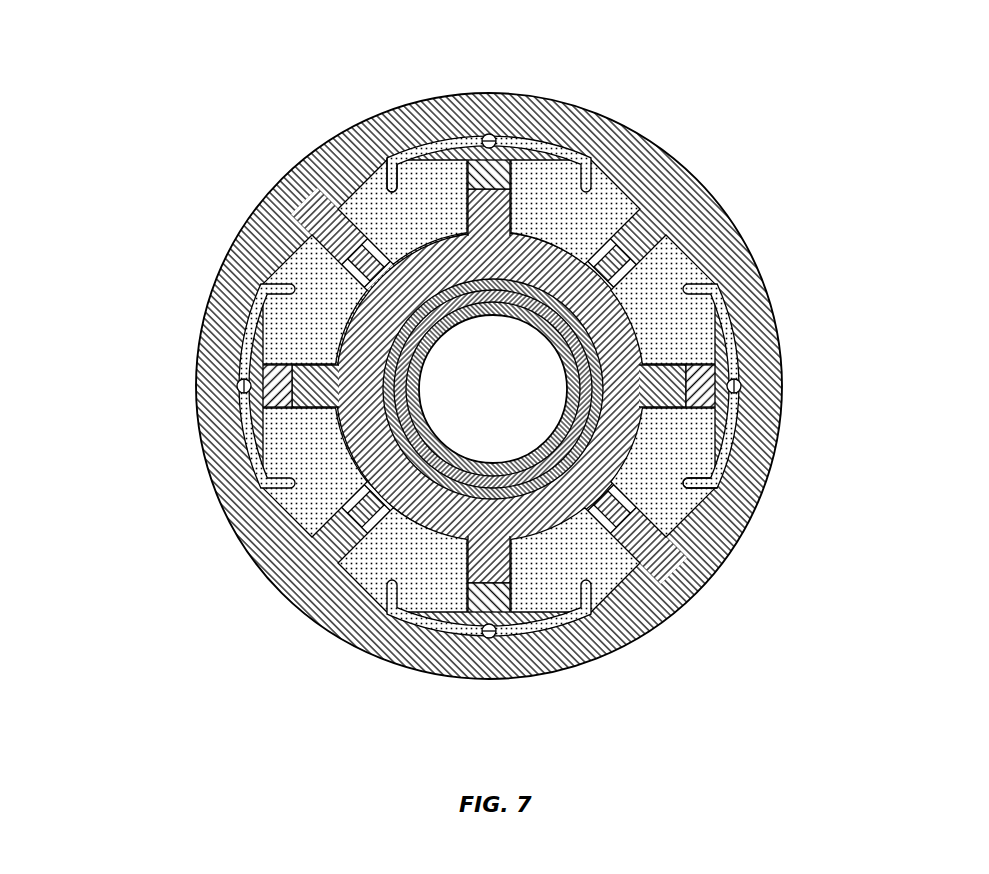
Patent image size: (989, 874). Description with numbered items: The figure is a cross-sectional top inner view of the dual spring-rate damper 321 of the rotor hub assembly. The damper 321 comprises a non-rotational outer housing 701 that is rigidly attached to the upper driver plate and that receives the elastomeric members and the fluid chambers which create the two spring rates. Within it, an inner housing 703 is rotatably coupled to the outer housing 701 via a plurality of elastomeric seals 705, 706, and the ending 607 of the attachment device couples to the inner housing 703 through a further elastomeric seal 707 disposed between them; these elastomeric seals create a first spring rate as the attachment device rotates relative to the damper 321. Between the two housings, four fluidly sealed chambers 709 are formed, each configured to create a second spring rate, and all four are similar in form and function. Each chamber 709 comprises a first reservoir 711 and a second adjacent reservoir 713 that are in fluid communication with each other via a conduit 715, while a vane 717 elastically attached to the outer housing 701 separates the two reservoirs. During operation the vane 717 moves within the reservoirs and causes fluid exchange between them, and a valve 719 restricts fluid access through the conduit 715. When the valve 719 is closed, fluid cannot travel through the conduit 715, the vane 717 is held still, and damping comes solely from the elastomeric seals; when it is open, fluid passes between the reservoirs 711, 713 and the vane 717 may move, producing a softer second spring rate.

The damper 321 is at (127, 56).
The outer housing 701 is at (240, 228).
The inner housing 703 is at (640, 596).
The elastomeric seal 705 is at (743, 382).
The elastomeric seal 706 is at (357, 275).
The elastomeric seal 707 is at (733, 460).
The fluidly sealed chamber 709 is at (645, 197).
The first reservoir 711 is at (377, 213).
The second reservoir 713 is at (580, 210).
The conduit 715 is at (560, 140).
The vane 717 is at (397, 150).
The valve 719 is at (496, 135).
The ending 607 is at (603, 348).